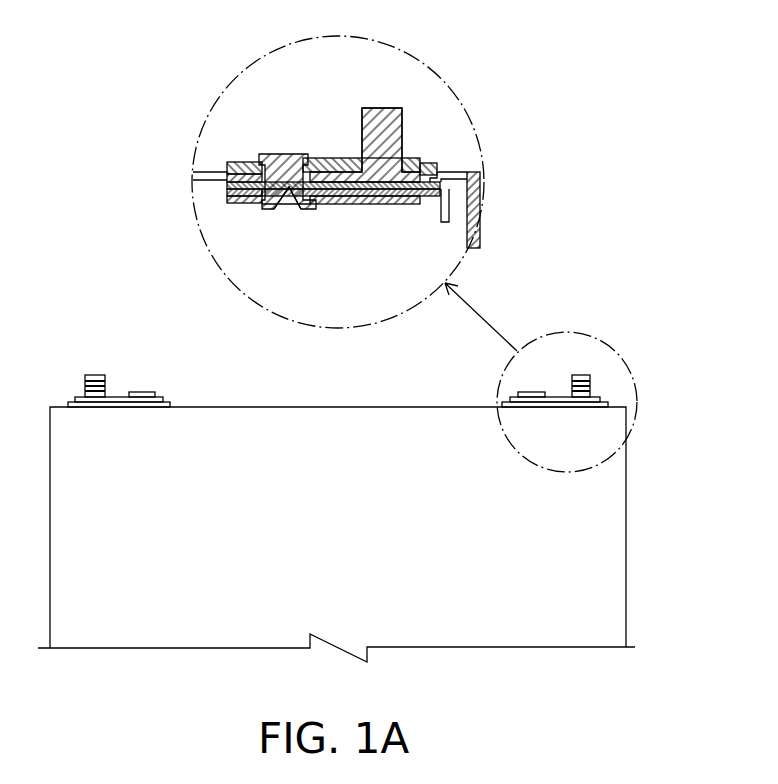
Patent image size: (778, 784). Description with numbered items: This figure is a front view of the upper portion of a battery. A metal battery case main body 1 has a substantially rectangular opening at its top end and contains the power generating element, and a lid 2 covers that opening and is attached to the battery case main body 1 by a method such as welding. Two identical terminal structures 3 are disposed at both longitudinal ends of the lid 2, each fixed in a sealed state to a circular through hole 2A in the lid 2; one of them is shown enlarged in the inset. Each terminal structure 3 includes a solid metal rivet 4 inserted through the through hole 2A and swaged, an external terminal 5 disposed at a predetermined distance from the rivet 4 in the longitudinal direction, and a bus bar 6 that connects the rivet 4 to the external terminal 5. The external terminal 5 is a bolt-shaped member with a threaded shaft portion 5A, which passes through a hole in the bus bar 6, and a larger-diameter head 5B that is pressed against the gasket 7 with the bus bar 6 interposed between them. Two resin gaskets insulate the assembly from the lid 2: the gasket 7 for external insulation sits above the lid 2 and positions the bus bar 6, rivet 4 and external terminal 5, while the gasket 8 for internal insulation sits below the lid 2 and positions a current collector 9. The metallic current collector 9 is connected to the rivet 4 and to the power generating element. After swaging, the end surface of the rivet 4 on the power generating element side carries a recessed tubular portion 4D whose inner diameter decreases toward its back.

The battery case main body 1 is at (484, 204).
The lid 2 is at (447, 173).
The through hole 2A is at (240, 162).
The terminal structure 3 is at (427, 77).
The rivet 4 is at (286, 152).
The recessed tubular portion 4D is at (290, 208).
The external terminal 5 is at (383, 108).
The shaft portion 5A is at (404, 128).
The head 5B is at (408, 206).
The bus bar 6 is at (332, 158).
The gasket 7 is at (427, 166).
The gasket 8 is at (242, 207).
The current collector 9 is at (356, 210).